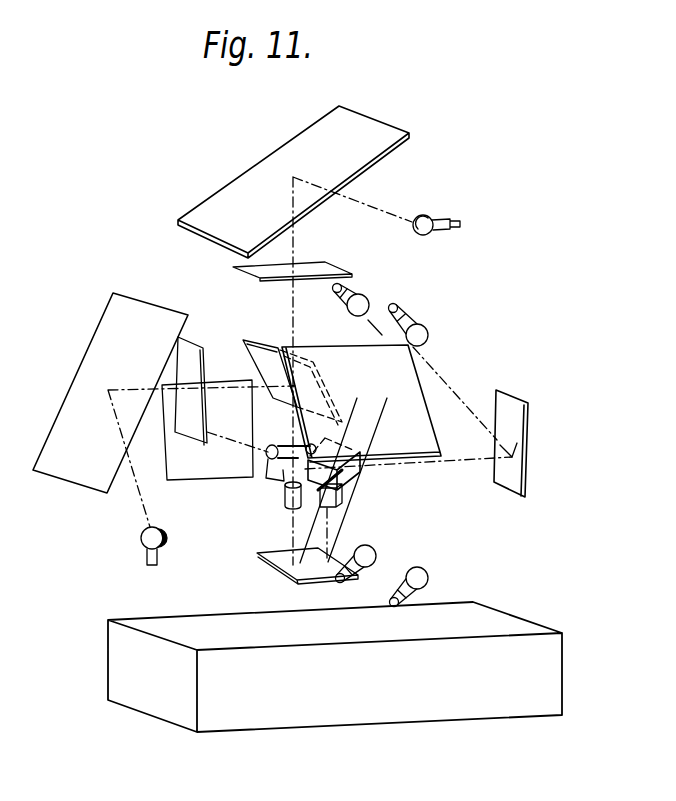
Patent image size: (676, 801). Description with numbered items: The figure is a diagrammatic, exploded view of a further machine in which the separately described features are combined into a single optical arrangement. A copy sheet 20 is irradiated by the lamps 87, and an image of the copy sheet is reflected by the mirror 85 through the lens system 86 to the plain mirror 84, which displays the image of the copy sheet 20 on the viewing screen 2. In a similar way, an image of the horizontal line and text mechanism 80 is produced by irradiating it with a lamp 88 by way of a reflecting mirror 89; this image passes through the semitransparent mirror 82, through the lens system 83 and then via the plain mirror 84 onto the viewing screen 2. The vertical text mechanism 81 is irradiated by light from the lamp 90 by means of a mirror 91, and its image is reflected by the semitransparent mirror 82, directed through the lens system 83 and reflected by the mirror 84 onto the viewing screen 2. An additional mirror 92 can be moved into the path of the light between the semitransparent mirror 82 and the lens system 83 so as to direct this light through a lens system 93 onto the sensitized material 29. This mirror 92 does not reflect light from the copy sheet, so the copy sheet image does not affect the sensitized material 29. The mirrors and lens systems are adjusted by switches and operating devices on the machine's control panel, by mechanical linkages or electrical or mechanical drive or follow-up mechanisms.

The viewing screen 2 is at (420, 430).
The copy sheet 20 is at (522, 438).
The sensitized material 29 is at (212, 470).
The horizontal line and text mechanism 80 is at (257, 273).
The vertical text mechanism 81 is at (195, 423).
The semitransparent mirror 82 is at (253, 347).
The lens system 83 is at (287, 500).
The plain mirror 84 is at (287, 572).
The mirror 85 is at (353, 473).
The lens system 86 is at (343, 502).
The lamps 87 is at (418, 320).
The lamp 88 is at (425, 213).
The reflecting mirror 89 is at (234, 190).
The lamp 90 is at (165, 542).
The mirror 91 is at (100, 347).
The additional mirror 92 is at (280, 478).
The lens system 93 is at (272, 441).